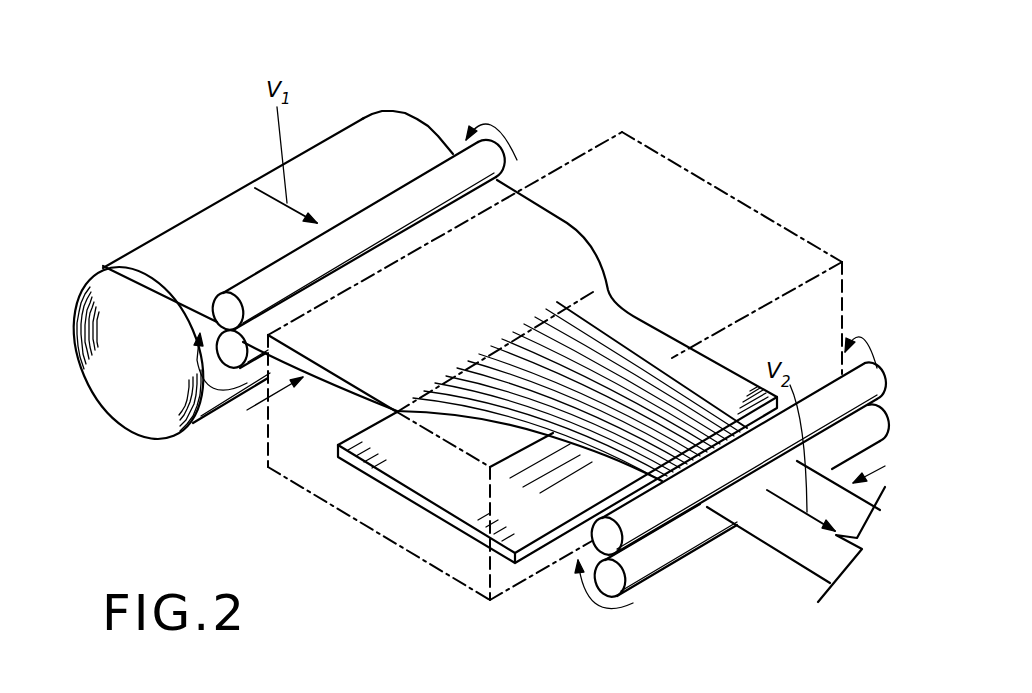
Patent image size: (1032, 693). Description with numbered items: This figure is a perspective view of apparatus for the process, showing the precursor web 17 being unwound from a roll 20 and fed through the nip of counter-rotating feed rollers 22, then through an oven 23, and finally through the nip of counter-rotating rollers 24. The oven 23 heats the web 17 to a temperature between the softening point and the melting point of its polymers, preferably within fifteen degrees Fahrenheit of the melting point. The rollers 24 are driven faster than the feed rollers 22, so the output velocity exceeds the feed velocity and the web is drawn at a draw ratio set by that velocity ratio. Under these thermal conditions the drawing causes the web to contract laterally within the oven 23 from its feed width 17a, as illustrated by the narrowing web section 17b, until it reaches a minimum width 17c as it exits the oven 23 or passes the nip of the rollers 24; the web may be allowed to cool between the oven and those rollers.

The precursor web 17 is at (227, 237).
The feed width 17a is at (575, 217).
The web section 17b is at (592, 358).
The minimum width 17c is at (750, 544).
The roll 20 is at (127, 365).
The counter-rotating feed rollers 22 is at (433, 177).
The oven 23 is at (717, 185).
The counter-rotating rollers 24 is at (817, 400).